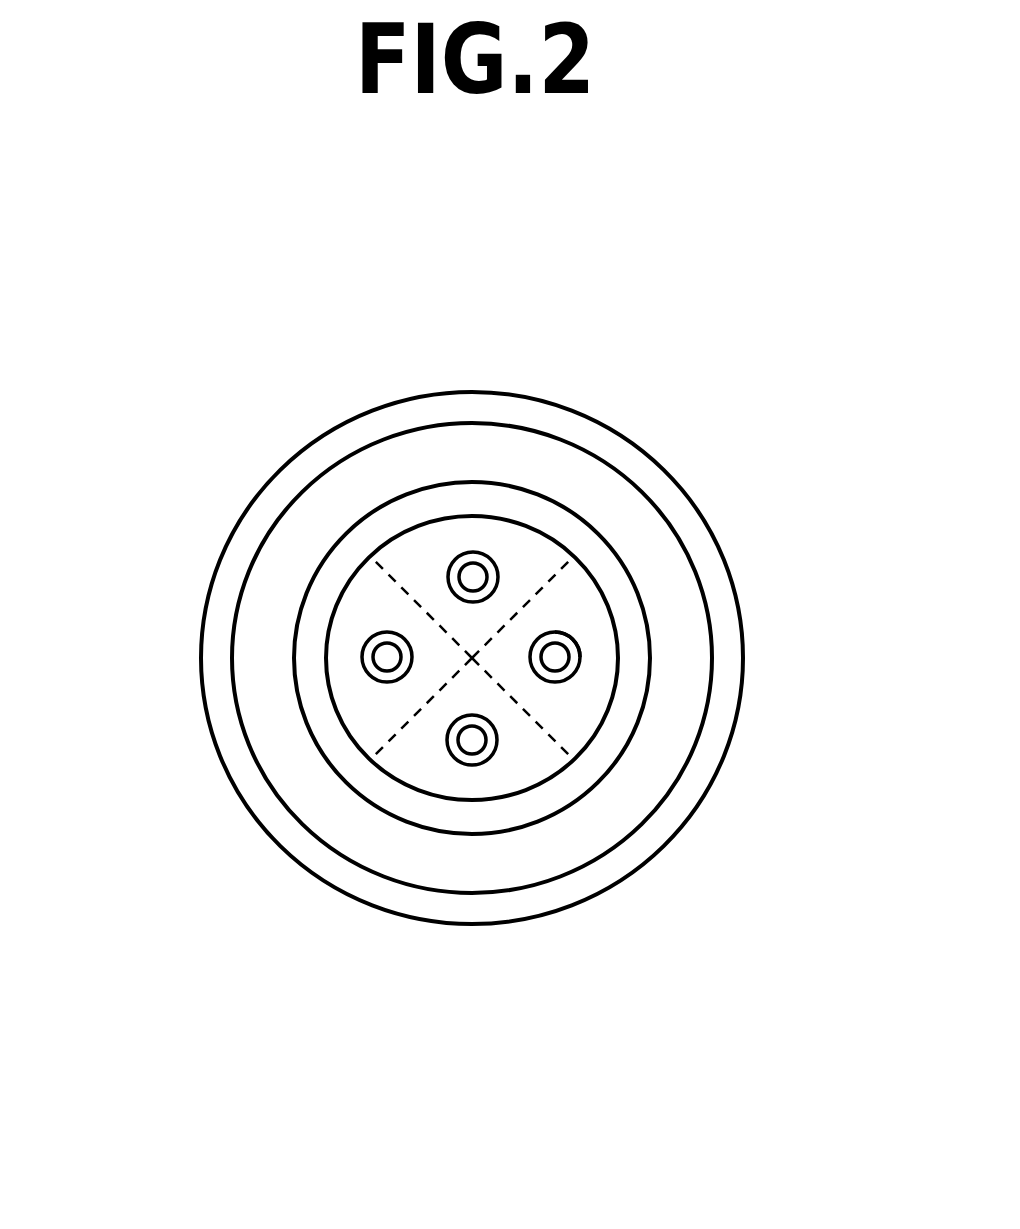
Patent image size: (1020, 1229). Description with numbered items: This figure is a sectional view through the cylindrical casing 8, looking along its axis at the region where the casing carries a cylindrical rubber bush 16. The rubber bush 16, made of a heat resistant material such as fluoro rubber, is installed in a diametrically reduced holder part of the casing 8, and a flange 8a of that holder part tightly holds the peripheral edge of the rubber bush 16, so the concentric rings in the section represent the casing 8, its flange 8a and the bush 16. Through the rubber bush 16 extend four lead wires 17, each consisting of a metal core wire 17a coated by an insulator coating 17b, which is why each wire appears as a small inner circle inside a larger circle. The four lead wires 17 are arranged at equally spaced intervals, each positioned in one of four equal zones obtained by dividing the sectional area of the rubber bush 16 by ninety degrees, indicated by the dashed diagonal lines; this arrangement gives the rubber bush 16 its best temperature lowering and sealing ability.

The cylindrical casing 8 is at (662, 593).
The flange 8a is at (540, 803).
The rubber bush 16 is at (567, 715).
The lead wire 17 is at (481, 551).
The core wire 17a is at (560, 657).
The insulator coating 17b is at (554, 632).